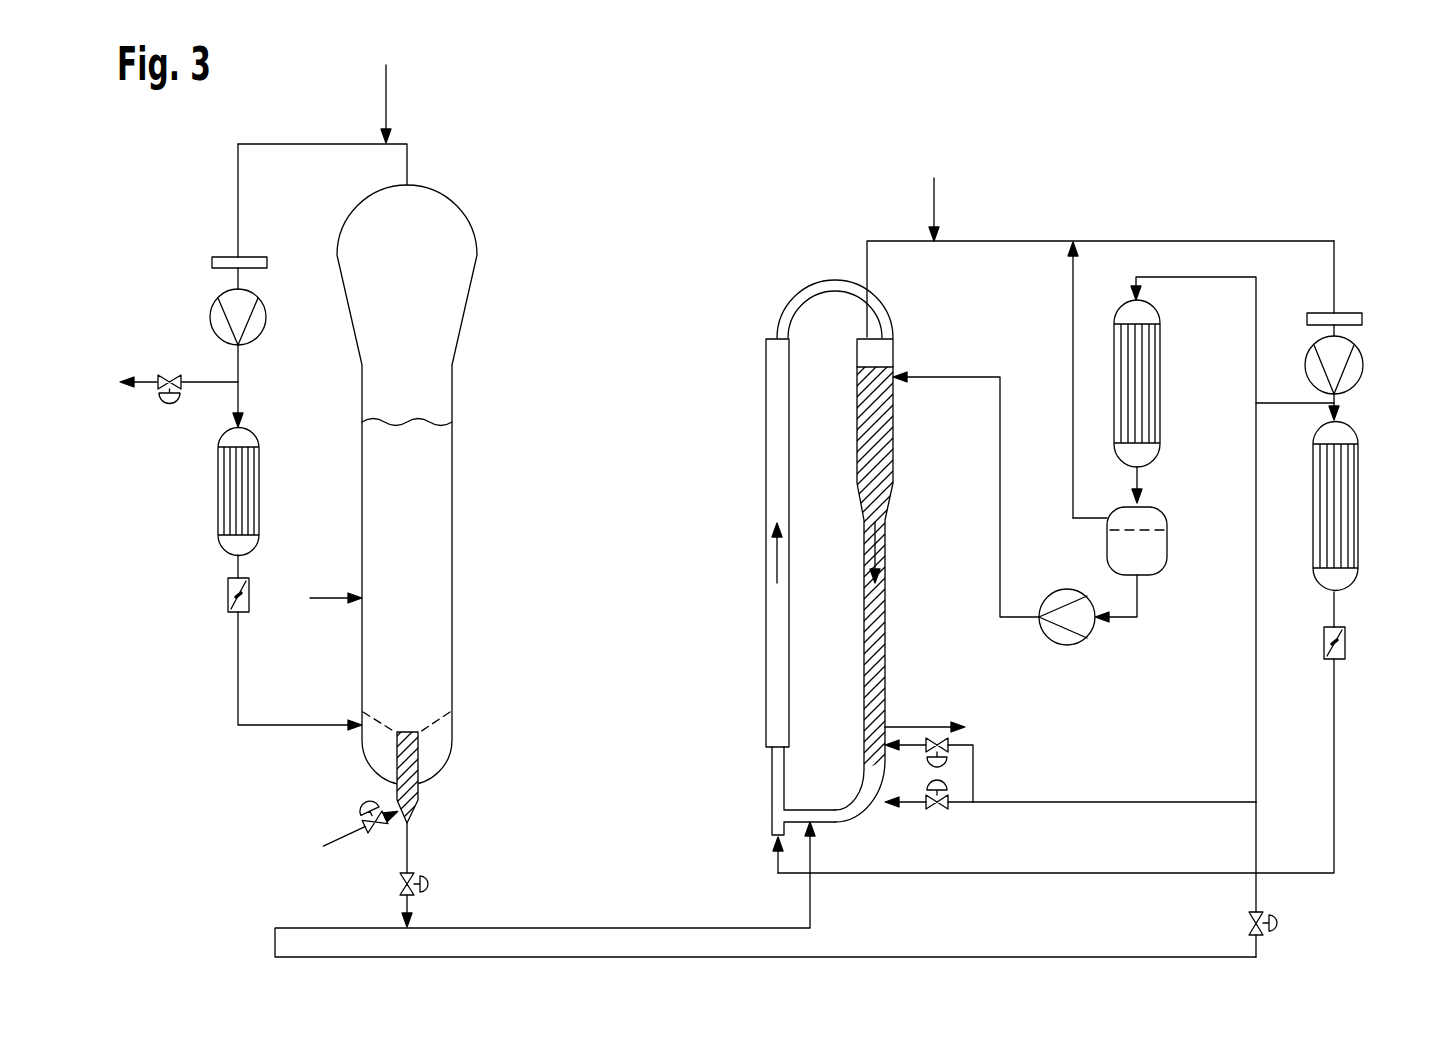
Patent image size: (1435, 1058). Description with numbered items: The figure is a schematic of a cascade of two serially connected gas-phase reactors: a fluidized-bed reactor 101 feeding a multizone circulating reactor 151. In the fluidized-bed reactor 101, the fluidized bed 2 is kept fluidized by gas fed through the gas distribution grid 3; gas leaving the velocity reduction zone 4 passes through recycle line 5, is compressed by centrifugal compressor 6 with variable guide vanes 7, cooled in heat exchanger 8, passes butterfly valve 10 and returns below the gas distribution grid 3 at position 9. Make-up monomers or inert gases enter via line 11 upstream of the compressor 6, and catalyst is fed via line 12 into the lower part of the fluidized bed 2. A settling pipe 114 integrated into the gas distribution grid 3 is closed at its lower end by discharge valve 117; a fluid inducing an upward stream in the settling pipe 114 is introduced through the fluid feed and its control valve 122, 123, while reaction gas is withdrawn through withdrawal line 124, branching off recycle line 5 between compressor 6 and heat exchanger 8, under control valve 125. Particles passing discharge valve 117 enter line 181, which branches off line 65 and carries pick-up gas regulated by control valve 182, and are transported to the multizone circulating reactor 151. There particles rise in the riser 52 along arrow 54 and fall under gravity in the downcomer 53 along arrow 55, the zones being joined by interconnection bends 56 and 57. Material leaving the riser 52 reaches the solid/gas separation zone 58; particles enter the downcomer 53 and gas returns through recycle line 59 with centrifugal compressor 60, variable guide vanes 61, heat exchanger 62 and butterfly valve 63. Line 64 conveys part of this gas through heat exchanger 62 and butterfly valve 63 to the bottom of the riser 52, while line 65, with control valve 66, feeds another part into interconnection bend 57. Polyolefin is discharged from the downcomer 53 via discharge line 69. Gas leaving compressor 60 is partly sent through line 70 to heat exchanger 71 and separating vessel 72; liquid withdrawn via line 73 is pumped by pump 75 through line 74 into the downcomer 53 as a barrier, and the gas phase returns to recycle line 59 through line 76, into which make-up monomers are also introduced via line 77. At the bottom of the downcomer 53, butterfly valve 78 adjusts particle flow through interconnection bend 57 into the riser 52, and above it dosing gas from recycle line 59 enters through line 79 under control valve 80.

The fluidized bed 2 is at (383, 480).
The gas distribution grid 3 is at (437, 718).
The velocity reduction zone 4 is at (470, 228).
The recycle line 5 is at (407, 163).
The centrifugal compressor 6 is at (210, 320).
The variable guide vanes 7 is at (212, 262).
The heat exchanger 8 is at (218, 490).
The position 9 is at (358, 722).
The butterfly valve 10 is at (228, 595).
The line 11 is at (386, 97).
The line 12 is at (320, 598).
The riser 52 is at (766, 493).
The downcomer 53 is at (885, 620).
The arrow 54 is at (766, 555).
The arrow 55 is at (880, 545).
The interconnection bend 56 is at (828, 280).
The interconnection bend 57 is at (855, 815).
The solid/gas separation zone 58 is at (893, 352).
The recycle line 59 is at (1338, 263).
The centrifugal compressor 60 is at (1365, 378).
The variable guide vanes 61 is at (1365, 318).
The heat exchanger 62 is at (1360, 550).
The butterfly valve 63 is at (1348, 643).
The line 64 is at (1150, 880).
The line 65 is at (1200, 802).
The control valve 66 is at (940, 805).
The discharge line 69 is at (934, 725).
The line 70 is at (1256, 288).
The heat exchanger 71 is at (1163, 363).
The separating vessel 72 is at (1160, 575).
The line 73 is at (1120, 620).
The line 74 is at (1000, 375).
The pump 75 is at (1055, 590).
The line 76 is at (1073, 277).
The line 77 is at (934, 202).
The butterfly valve 78 is at (868, 745).
The line 79 is at (973, 770).
The control valve 80 is at (958, 740).
The fluidized-bed reactor 101 is at (355, 436).
The settling pipe 114 is at (420, 800).
The discharge valve 117 is at (430, 884).
The control valve 122 is at (330, 840).
The valve 123 is at (365, 805).
The withdrawal line 124 is at (203, 382).
The control valve 125 is at (160, 403).
The multizone circulating reactor 151 is at (740, 409).
The line 181 is at (665, 928).
The control valve 182 is at (812, 825).